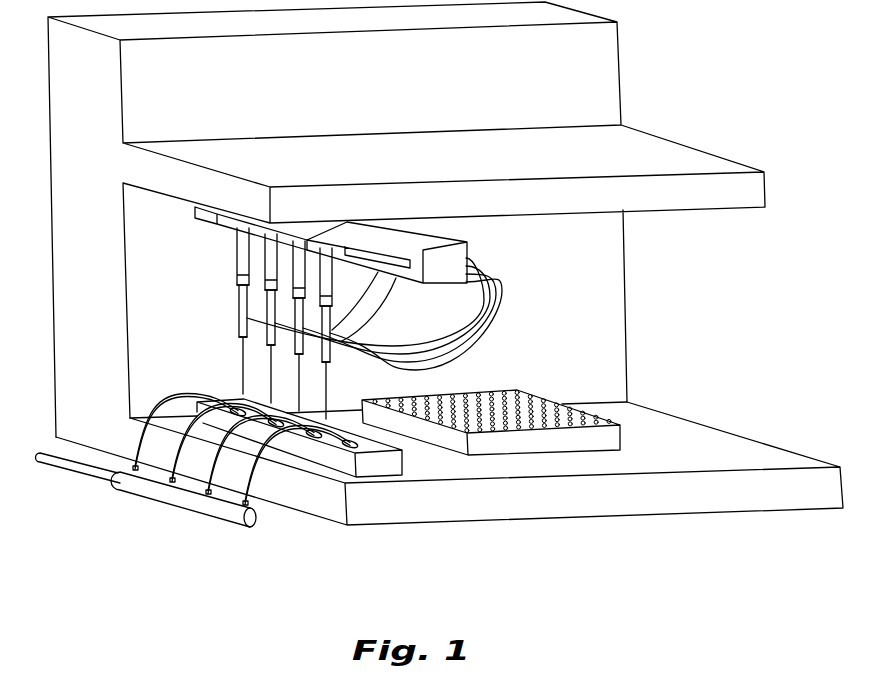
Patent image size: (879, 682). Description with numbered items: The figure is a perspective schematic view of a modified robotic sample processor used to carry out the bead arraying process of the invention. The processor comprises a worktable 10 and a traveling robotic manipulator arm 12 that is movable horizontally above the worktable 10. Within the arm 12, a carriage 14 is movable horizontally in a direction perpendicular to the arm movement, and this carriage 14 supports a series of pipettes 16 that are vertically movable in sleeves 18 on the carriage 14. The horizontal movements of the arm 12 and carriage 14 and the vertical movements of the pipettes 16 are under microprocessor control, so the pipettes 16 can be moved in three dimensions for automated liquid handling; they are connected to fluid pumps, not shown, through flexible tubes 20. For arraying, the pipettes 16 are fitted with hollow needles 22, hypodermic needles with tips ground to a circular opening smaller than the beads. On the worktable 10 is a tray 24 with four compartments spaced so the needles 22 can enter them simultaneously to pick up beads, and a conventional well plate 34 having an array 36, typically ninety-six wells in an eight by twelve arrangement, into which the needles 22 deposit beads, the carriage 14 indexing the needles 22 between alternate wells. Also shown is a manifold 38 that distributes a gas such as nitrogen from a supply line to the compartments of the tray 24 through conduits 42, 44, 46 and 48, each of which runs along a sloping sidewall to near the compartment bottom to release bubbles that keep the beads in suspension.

The worktable 10 is at (698, 440).
The traveling robotic manipulator arm 12 is at (456, 253).
The carriage 14 is at (217, 216).
The pipettes 16 is at (327, 313).
The sleeves 18 is at (327, 267).
The flexible tubes 20 is at (478, 308).
The hollow needles 22 is at (327, 393).
The tray 24 is at (382, 467).
The well plate 34 is at (577, 443).
The array 36 is at (508, 380).
The manifold 38 is at (172, 497).
The conduit 42 is at (117, 460).
The conduit 44 is at (147, 495).
The conduit 46 is at (222, 483).
The conduit 48 is at (262, 478).